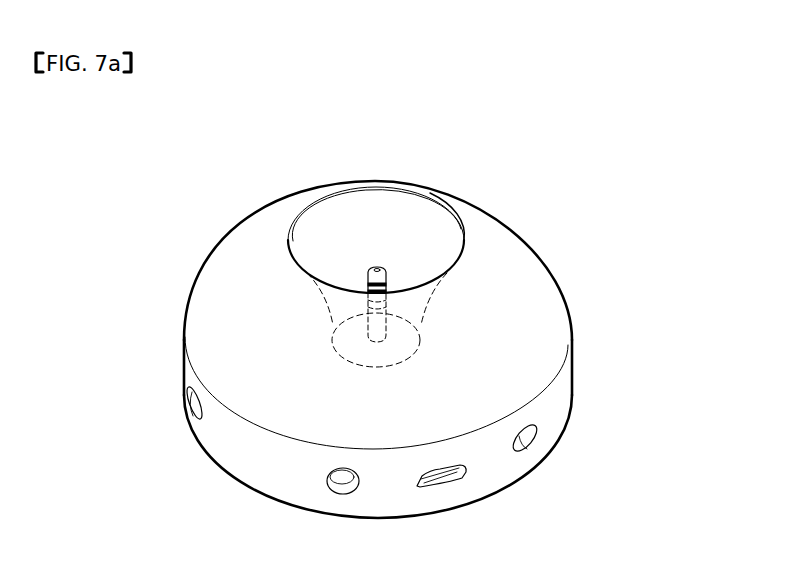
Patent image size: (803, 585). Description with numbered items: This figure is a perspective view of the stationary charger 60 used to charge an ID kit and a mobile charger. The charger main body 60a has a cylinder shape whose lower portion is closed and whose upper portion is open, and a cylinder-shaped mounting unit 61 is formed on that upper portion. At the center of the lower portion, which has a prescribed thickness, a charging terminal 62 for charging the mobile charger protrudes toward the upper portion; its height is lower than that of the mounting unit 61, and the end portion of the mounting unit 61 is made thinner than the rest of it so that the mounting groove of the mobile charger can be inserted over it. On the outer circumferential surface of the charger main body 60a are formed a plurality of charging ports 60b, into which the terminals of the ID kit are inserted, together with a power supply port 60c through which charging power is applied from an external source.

The stationary charger 60 is at (182, 220).
The charger main body 60a is at (563, 387).
The charging ports 60b is at (343, 482).
The power supply port 60c is at (447, 480).
The mounting unit 61 is at (520, 257).
The charging terminal 62 is at (377, 265).